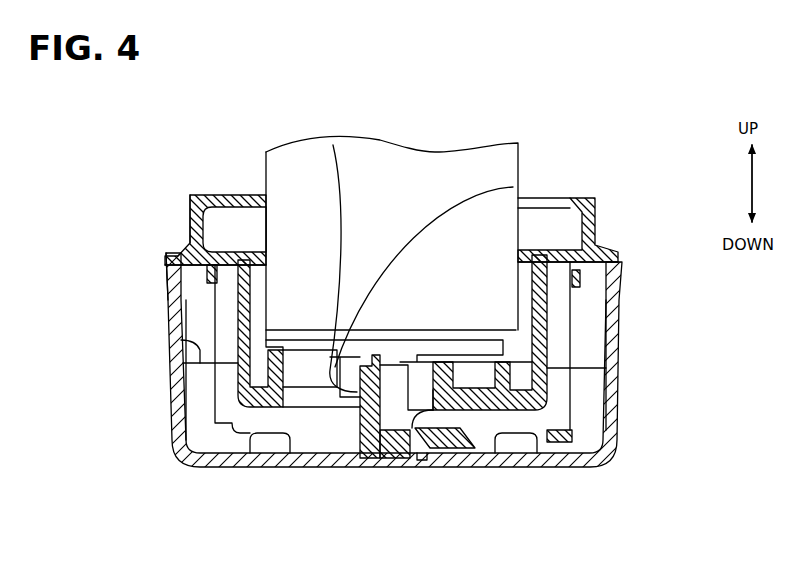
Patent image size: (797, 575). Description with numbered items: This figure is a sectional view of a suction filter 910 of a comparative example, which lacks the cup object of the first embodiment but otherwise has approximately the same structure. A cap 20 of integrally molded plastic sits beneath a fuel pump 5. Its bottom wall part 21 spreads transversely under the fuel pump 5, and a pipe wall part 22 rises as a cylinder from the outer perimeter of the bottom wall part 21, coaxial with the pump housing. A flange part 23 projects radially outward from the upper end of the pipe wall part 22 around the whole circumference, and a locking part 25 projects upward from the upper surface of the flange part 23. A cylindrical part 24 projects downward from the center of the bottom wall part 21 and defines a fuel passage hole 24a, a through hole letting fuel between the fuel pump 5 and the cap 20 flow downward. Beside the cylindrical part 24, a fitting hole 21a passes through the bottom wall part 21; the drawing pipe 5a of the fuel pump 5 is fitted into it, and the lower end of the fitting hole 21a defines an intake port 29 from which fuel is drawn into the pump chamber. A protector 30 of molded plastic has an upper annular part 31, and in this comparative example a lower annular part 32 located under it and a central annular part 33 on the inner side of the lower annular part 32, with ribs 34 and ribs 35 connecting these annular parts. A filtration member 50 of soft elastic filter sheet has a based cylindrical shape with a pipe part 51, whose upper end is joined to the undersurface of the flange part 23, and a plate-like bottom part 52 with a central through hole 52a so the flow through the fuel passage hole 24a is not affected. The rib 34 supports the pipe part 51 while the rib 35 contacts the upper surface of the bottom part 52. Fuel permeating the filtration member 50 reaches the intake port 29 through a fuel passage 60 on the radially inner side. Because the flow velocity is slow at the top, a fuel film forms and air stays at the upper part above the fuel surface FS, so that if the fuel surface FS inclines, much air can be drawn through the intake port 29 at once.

The fuel pump 5 is at (520, 170).
The drawing pipe 5a is at (333, 145).
The cap 20 is at (266, 172).
The bottom wall part 21 is at (490, 403).
The fitting hole 21a is at (520, 188).
The pipe wall part 22 is at (543, 314).
The flange part 23 is at (610, 258).
The cylindrical part 24 is at (407, 459).
The fuel passage hole 24a is at (387, 459).
The locking part 25 is at (590, 226).
The intake port 29 is at (322, 409).
The protector 30 is at (200, 300).
The upper annular part 31 is at (580, 285).
The lower annular part 32 is at (562, 442).
The central annular part 33 is at (462, 449).
The rib 34 is at (590, 355).
The rib 35 is at (297, 446).
The filtration member 50 is at (617, 447).
The pipe part 51 is at (166, 312).
The bottom part 52 is at (533, 436).
The through hole 52a is at (425, 460).
The fuel passage 60 is at (205, 403).
The suction filter 910 is at (200, 183).
The fuel surface FS is at (181, 340).